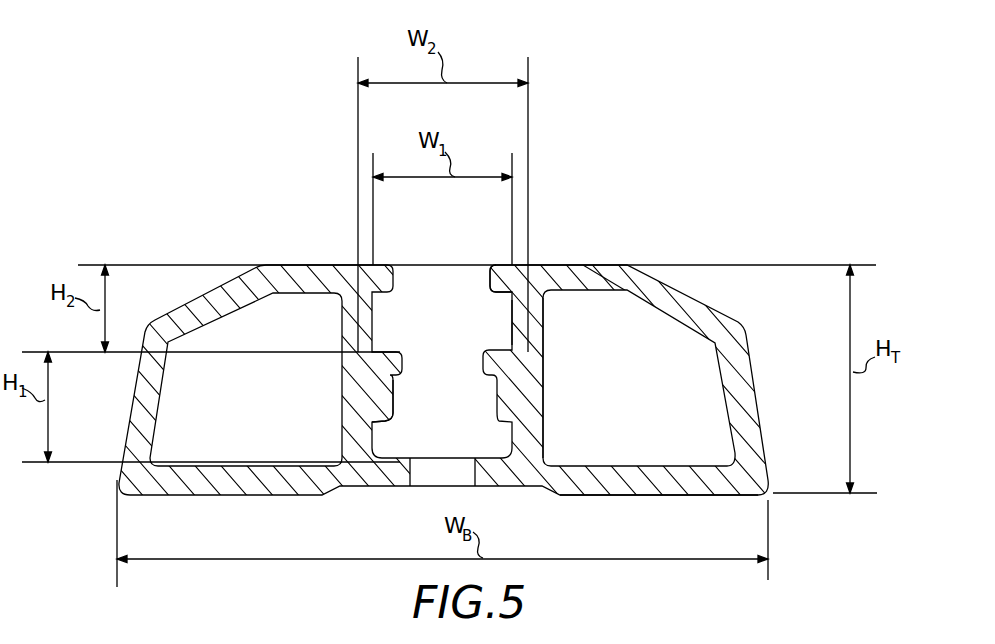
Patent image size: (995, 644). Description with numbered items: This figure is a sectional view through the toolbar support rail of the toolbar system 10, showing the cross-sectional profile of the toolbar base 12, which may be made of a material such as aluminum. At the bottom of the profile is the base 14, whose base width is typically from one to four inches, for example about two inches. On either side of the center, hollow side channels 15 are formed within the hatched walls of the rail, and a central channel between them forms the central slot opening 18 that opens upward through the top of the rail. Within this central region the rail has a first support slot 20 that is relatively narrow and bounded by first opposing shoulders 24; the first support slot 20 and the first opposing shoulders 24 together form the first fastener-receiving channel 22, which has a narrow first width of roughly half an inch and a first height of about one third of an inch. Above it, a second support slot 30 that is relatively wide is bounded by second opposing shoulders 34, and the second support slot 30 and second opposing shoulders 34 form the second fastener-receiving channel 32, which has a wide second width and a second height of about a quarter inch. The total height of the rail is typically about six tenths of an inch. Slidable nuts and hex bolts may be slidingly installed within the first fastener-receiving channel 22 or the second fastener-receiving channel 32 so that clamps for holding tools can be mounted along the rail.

The toolbar system 10 is at (430, 417).
The toolbar base 12 is at (215, 117).
The base 14 is at (593, 495).
The side channels 15 is at (248, 411).
The central slot opening 18 is at (476, 296).
The first support slot 20 is at (430, 393).
The first fastener-receiving channel 22 is at (398, 397).
The first opposing shoulders 24 is at (485, 363).
The second support slot 30 is at (540, 352).
The second fastener-receiving channel 32 is at (488, 320).
The second opposing shoulders 34 is at (487, 277).